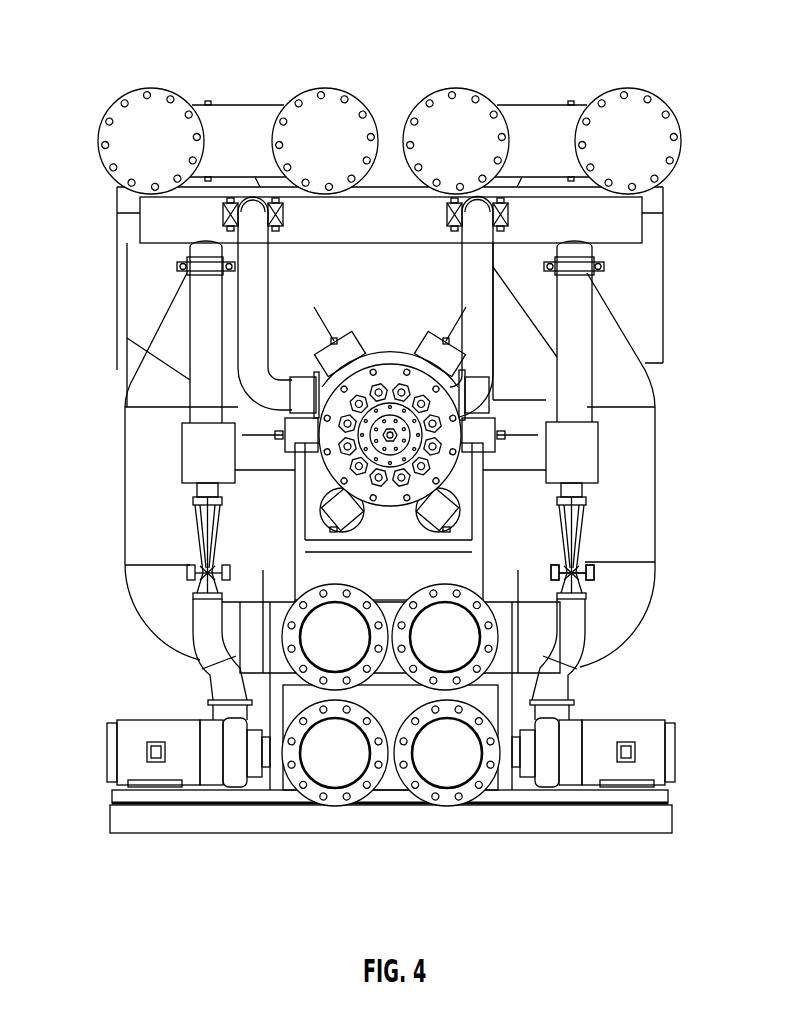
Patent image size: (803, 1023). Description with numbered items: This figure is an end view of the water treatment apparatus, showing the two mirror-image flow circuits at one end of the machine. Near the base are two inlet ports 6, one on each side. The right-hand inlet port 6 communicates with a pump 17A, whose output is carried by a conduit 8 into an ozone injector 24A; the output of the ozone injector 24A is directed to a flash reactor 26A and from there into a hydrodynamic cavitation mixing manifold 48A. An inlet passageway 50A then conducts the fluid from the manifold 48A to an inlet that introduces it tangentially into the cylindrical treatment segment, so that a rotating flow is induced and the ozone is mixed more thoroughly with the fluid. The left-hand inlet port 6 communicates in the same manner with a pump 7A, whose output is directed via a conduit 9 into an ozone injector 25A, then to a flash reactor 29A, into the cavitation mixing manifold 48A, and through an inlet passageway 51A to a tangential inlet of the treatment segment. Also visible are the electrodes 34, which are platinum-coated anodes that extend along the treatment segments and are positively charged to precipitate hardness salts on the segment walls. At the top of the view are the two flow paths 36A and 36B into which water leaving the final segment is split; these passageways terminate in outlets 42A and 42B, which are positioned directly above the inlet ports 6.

The flow path 36A is at (540, 105).
The flow path 36B is at (250, 107).
The hydrodynamic cavitation mixing manifold 48A is at (664, 198).
The inlet passageway 50A is at (493, 358).
The flash reactor 26A is at (588, 442).
The flash reactor 29A is at (182, 445).
The inlet passageway 51A is at (223, 317).
The electrodes 34 is at (583, 508).
The ozone injector 24A is at (585, 542).
The ozone injector 25A is at (185, 537).
The outlet 42A is at (462, 642).
The outlet 42B is at (320, 635).
The inlet ports 6 is at (343, 772).
The conduit 9 is at (200, 680).
The conduit 8 is at (577, 672).
The pump 7A is at (107, 770).
The pump 17A is at (643, 752).